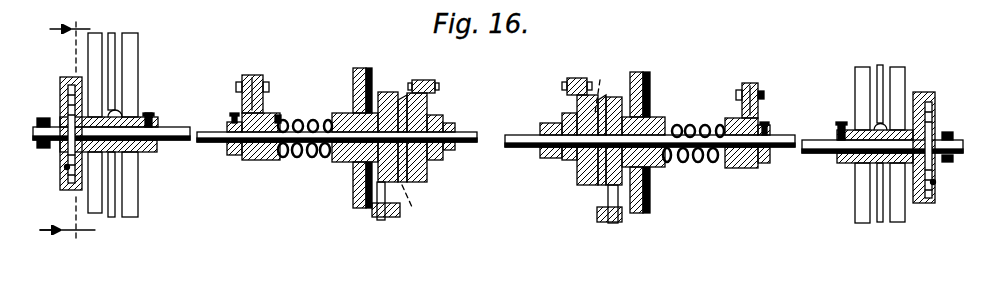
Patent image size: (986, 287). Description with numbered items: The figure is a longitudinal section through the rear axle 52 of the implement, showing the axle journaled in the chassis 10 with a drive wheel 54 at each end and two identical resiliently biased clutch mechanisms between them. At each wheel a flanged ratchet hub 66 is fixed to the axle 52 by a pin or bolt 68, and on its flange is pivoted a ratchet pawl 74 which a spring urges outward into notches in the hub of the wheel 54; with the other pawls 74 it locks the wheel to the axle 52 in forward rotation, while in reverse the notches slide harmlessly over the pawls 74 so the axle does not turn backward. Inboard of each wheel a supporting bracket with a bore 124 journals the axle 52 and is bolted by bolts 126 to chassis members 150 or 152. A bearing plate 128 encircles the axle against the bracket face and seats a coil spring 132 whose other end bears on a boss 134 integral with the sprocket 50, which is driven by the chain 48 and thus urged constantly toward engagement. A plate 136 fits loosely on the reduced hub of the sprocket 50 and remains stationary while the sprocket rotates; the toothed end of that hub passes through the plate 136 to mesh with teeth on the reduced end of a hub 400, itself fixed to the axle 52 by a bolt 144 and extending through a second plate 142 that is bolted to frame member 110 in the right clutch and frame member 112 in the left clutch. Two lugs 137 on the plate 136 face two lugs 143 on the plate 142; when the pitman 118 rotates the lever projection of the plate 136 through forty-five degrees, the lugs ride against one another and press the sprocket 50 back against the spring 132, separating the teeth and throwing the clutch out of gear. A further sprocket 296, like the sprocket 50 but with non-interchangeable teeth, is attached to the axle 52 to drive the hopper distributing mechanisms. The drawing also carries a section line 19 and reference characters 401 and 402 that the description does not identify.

The chassis 10 is at (245, 67).
The section line 19- 19 is at (54, 129).
The chain 48 is at (652, 185).
The sprocket 50 is at (353, 190).
The axle 52 is at (173, 143).
The drive wheel 54 is at (136, 72).
The flanged ratchet hub 66 is at (63, 155).
The pin or bolt 68 is at (50, 120).
The ratchet pawl 74 is at (65, 100).
The rod 110 is at (568, 82).
The rod 112 is at (432, 82).
The pitman 118 is at (387, 218).
The bore 124 is at (252, 162).
The bolt 126 is at (279, 115).
The bearing plate 128 is at (277, 162).
The coil spring 132 is at (305, 120).
The boss 134 is at (345, 160).
The plate 136 is at (385, 97).
The lugs 137 is at (528, 135).
The second plate 142 is at (422, 182).
The lugs 143 is at (403, 112).
The bolt 144 is at (447, 125).
The chassis member 150 is at (262, 77).
The chassis member 152 is at (755, 83).
The sprocket 296 is at (650, 200).
The hub 400 is at (433, 162).
The collar 401 is at (568, 167).
The pin 402 is at (150, 117).